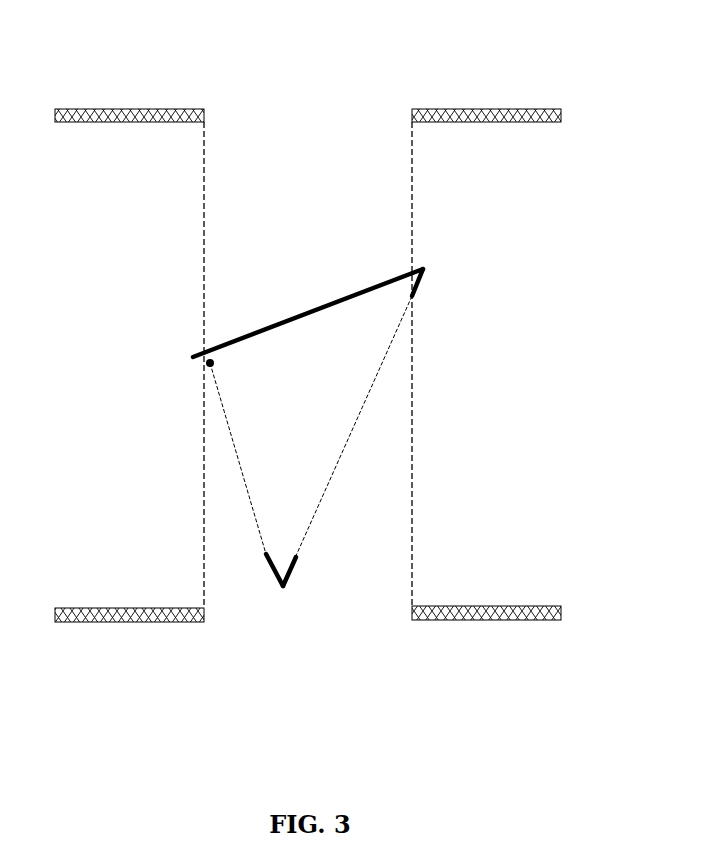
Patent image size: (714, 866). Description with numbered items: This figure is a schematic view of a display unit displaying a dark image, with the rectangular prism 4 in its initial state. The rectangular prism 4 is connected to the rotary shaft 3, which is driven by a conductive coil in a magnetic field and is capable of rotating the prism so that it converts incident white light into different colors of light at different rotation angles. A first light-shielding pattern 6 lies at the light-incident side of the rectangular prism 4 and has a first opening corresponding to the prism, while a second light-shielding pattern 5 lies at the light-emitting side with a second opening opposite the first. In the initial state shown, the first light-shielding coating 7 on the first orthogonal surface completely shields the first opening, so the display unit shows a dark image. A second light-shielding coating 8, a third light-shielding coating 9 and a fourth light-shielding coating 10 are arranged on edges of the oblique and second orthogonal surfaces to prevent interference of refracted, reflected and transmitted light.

The rotary shaft 3 is at (203, 362).
The rectangular prism 4 is at (360, 390).
The second light-shielding pattern 5 is at (170, 110).
The first light-shielding pattern 6 is at (128, 619).
The first light-shielding coating 7 is at (302, 310).
The second light-shielding coating 8 is at (418, 292).
The third light-shielding coating 9 is at (272, 570).
The fourth light-shielding coating 10 is at (288, 572).